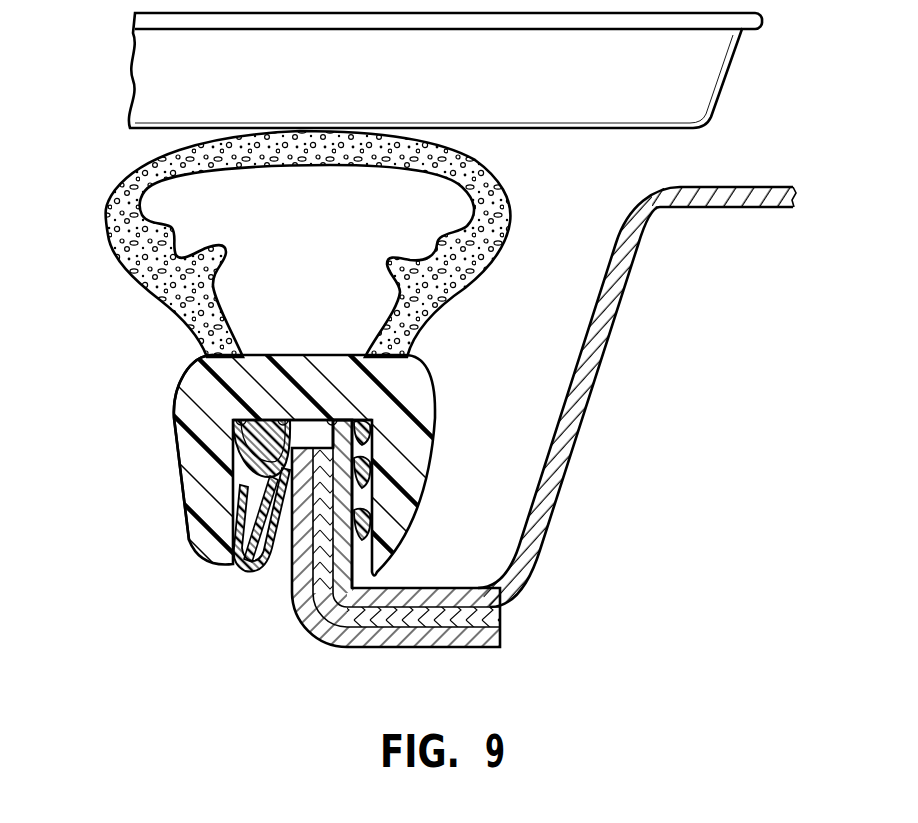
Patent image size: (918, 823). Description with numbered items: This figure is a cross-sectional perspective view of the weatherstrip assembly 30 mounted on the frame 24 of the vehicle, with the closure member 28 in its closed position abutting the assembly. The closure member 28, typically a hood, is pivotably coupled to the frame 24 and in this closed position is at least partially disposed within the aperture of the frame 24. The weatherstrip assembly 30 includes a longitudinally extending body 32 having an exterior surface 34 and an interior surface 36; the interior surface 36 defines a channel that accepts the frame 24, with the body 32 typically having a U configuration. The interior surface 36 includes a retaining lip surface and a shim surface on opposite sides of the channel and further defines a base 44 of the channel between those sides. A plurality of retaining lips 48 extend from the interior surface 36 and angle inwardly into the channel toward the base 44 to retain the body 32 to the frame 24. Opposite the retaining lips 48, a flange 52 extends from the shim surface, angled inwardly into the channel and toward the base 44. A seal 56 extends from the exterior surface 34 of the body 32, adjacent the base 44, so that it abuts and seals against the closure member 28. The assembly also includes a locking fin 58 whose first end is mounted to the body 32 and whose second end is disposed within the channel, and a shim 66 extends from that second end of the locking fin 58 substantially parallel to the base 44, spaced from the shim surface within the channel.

The frame 24 is at (407, 642).
The closure member 28 is at (705, 63).
The weatherstrip assembly 30 is at (84, 246).
The body 32 is at (187, 462).
The exterior surface 34 is at (177, 398).
The interior surface 36 is at (290, 417).
The base 44 is at (342, 417).
The retaining lips 48 is at (362, 533).
The flange 52 is at (252, 515).
The seal 56 is at (490, 203).
The locking fin 58 is at (273, 565).
The shim 66 is at (200, 389).